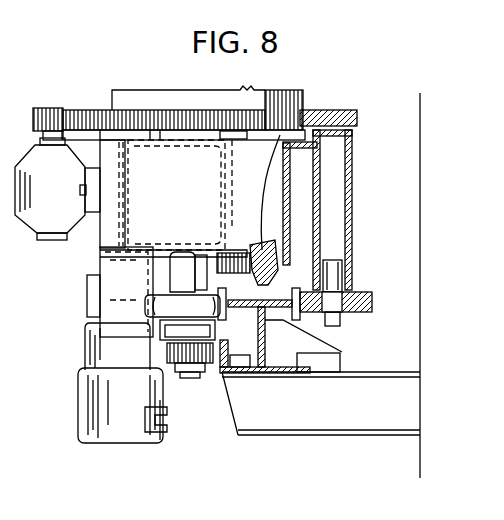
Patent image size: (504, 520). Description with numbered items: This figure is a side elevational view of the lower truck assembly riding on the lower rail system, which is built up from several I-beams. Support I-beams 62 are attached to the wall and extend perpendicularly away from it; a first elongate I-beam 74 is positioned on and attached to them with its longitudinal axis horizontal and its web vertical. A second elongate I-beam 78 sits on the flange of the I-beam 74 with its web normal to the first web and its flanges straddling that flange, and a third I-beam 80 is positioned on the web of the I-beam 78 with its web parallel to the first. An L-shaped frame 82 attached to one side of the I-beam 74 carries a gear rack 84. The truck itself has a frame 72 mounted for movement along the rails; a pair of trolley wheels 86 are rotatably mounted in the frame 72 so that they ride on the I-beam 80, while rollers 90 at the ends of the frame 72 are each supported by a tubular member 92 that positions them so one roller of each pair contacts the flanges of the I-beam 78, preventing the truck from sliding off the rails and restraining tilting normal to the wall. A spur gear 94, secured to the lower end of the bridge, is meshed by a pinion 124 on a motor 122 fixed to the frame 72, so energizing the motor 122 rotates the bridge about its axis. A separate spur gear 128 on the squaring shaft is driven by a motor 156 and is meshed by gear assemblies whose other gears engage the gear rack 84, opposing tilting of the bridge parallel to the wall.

The support I-beam 62 is at (290, 413).
The frame 72 is at (196, 190).
The first elongate I-beam 74 is at (243, 371).
The second elongate I-beam 78 is at (300, 320).
The third I-beam 80 is at (257, 298).
The L-shaped frame 82 is at (253, 367).
The gear rack 84 is at (222, 363).
The trolley wheels 86 is at (271, 269).
The rollers 90 is at (370, 300).
The tubular member 92 is at (178, 253).
The spur gear 94 is at (332, 110).
The motor 122 is at (37, 194).
The pinion 124 is at (52, 108).
The spur gear 128 is at (295, 258).
The motor 156 is at (105, 393).